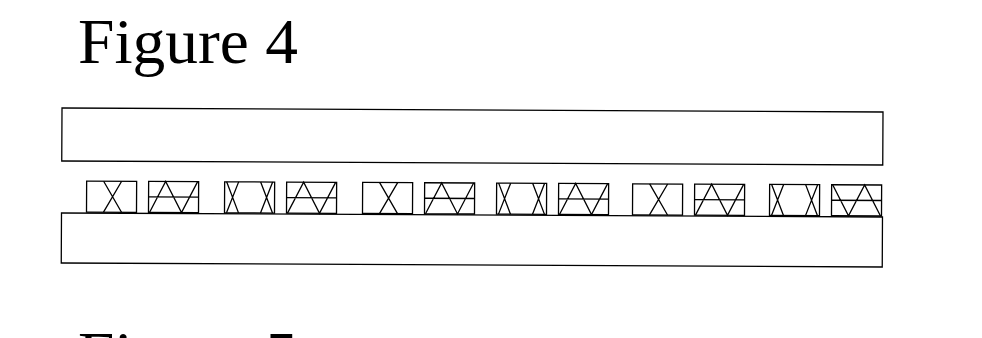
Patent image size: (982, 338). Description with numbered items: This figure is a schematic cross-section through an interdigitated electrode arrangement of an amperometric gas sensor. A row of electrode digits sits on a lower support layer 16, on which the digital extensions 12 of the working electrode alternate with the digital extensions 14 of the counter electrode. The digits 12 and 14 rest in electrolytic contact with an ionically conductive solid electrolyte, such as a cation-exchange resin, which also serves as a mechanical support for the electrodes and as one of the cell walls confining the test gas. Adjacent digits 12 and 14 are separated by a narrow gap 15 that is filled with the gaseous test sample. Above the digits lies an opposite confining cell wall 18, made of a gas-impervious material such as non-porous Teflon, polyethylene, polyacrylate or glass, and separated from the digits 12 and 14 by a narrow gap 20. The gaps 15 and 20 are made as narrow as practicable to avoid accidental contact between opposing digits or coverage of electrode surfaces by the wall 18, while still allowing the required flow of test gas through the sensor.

The digital extensions of the working electrode 12 is at (728, 172).
The digital extensions of the counter electrode 14 is at (660, 172).
The gap 15 is at (620, 195).
The bottom substrate 16 is at (392, 250).
The confining cell wall 18 is at (138, 130).
The gap 20 is at (308, 168).